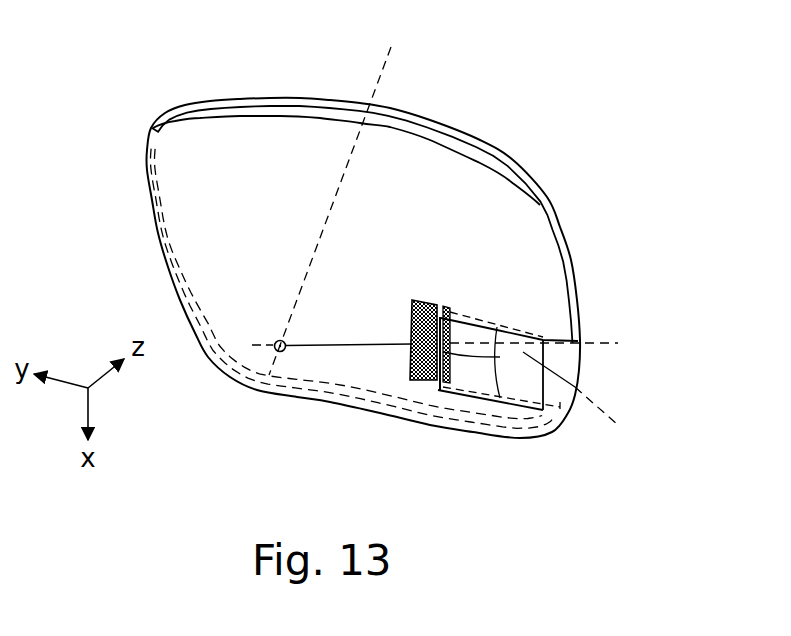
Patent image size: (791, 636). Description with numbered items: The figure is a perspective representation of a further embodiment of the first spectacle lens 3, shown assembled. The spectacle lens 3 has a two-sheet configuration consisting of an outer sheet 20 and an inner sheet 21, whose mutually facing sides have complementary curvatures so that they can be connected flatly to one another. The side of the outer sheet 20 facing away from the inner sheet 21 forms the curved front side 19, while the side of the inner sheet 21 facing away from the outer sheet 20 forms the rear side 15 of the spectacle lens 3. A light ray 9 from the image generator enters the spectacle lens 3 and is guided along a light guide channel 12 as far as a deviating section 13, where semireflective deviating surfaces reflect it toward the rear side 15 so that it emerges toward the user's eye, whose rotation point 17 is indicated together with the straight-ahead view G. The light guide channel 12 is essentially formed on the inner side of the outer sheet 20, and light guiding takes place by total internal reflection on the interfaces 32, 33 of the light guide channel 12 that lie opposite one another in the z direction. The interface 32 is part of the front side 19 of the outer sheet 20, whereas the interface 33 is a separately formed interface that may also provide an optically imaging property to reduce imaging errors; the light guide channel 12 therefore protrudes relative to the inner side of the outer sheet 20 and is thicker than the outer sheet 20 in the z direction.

The first spectacle lens 3 is at (151, 116).
The outer sheet 20 is at (235, 101).
The front side 19 is at (297, 97).
The inner sheet 21 is at (351, 119).
The straight-ahead view G is at (383, 73).
The rear side 15 is at (187, 171).
The rotation point 17 is at (278, 340).
The light ray 9 is at (363, 344).
The deviating section 13 is at (440, 300).
The light guide channel 12 is at (519, 330).
The interface 32 is at (582, 364).
The interface 33 is at (523, 383).